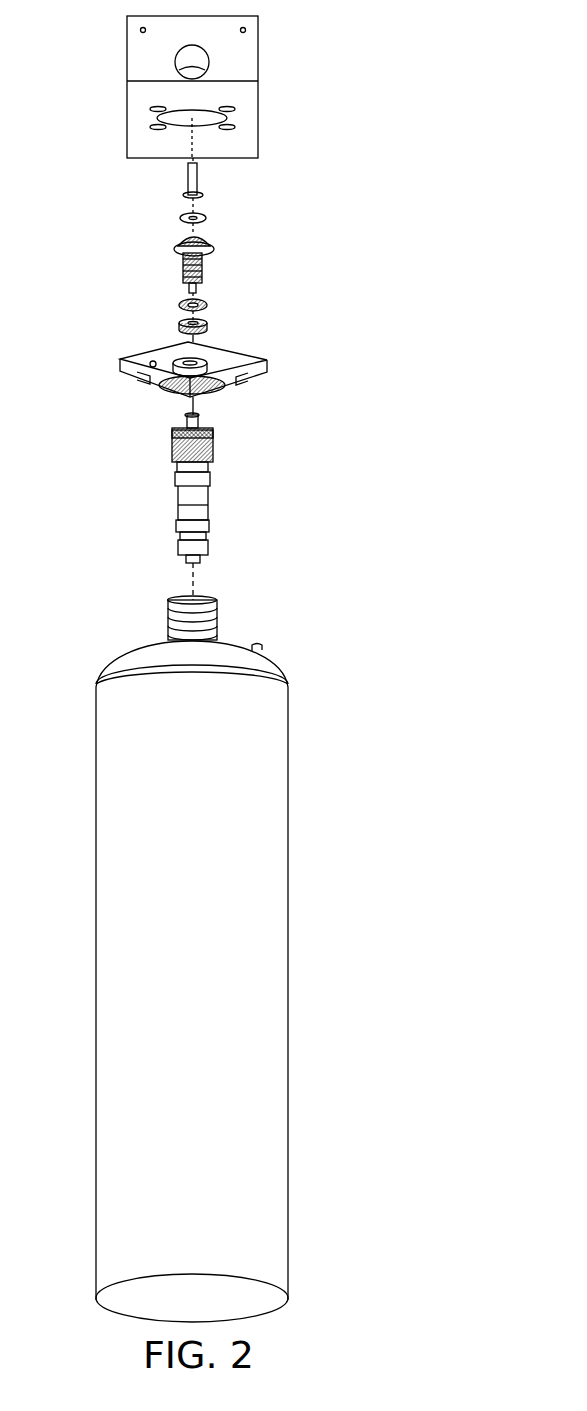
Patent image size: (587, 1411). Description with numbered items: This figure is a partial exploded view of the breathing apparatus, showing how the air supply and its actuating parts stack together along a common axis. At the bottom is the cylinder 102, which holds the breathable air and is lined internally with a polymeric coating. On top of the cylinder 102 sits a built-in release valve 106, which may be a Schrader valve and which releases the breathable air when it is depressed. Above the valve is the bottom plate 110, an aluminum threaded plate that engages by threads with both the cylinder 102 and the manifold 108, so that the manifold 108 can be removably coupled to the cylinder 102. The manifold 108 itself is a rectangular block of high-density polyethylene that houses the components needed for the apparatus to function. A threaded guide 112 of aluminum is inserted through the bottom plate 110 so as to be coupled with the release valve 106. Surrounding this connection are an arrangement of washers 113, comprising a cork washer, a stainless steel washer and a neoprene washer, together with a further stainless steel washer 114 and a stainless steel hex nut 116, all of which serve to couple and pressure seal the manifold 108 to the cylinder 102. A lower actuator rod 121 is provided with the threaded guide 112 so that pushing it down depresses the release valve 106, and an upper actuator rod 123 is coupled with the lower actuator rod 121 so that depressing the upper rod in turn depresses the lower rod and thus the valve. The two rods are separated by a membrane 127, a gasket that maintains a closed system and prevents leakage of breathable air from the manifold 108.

The cylinder 102 is at (288, 842).
The release valve 106 is at (213, 448).
The manifold 108 is at (258, 67).
The bottom plate 110 is at (267, 368).
The threaded guide 112 is at (203, 260).
The arrangement of washers 113 is at (173, 247).
The stainless steel washer 114 is at (207, 305).
The stainless steel hex nut 116 is at (208, 325).
The lower actuator rod 121 is at (188, 288).
The upper actuator rod 123 is at (200, 178).
The membrane 127 is at (206, 218).